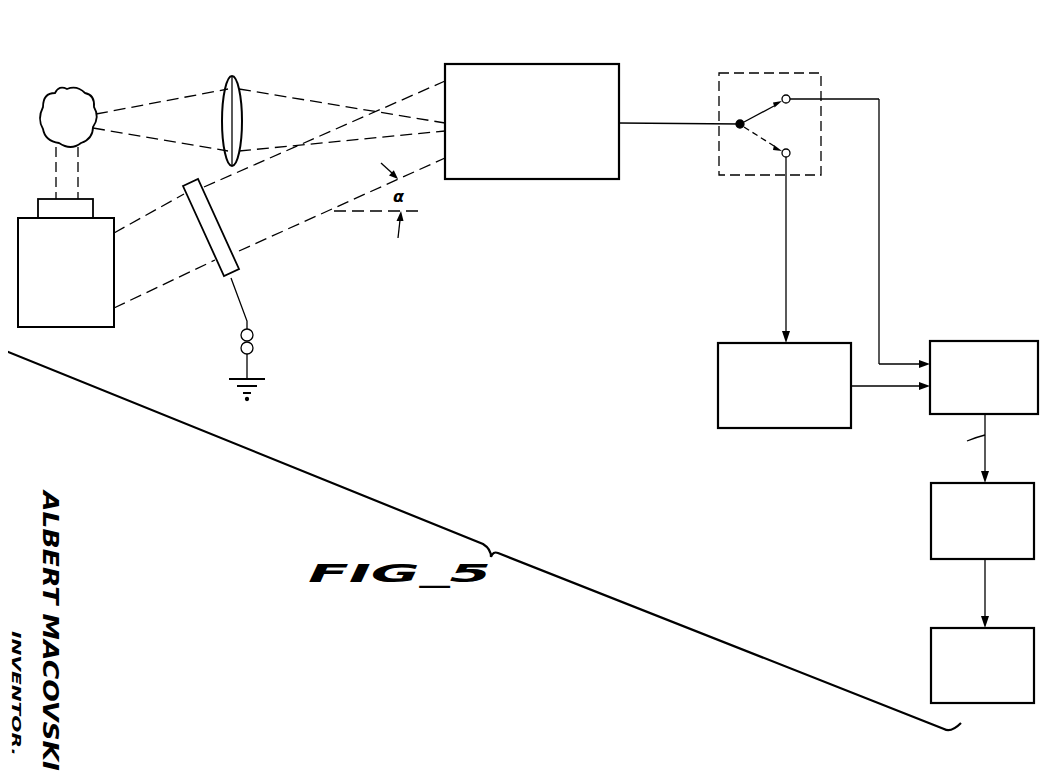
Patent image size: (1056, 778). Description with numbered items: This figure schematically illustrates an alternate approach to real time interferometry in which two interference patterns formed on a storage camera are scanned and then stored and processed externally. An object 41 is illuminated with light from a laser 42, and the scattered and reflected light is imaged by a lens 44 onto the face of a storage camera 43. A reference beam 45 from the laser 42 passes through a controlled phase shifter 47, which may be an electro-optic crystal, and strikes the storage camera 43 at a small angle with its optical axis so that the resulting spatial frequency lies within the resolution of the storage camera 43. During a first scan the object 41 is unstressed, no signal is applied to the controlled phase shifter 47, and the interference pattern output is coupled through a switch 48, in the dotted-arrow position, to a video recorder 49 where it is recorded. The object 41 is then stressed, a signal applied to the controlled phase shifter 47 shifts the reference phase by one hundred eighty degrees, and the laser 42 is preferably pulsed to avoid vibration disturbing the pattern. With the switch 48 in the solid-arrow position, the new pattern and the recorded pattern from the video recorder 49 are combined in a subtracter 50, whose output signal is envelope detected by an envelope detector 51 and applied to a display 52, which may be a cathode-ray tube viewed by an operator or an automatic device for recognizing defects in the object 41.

The object 41 is at (67, 88).
The laser 42 is at (108, 328).
The storage camera 43 is at (528, 63).
The lens 44 is at (233, 79).
The reference beam 45 is at (309, 222).
The controlled phase shifter 47 is at (236, 264).
The switch 48 is at (770, 72).
The video recorder 49 is at (735, 342).
The subtracter 50 is at (975, 340).
The envelope detector 51 is at (930, 520).
The display 52 is at (930, 665).